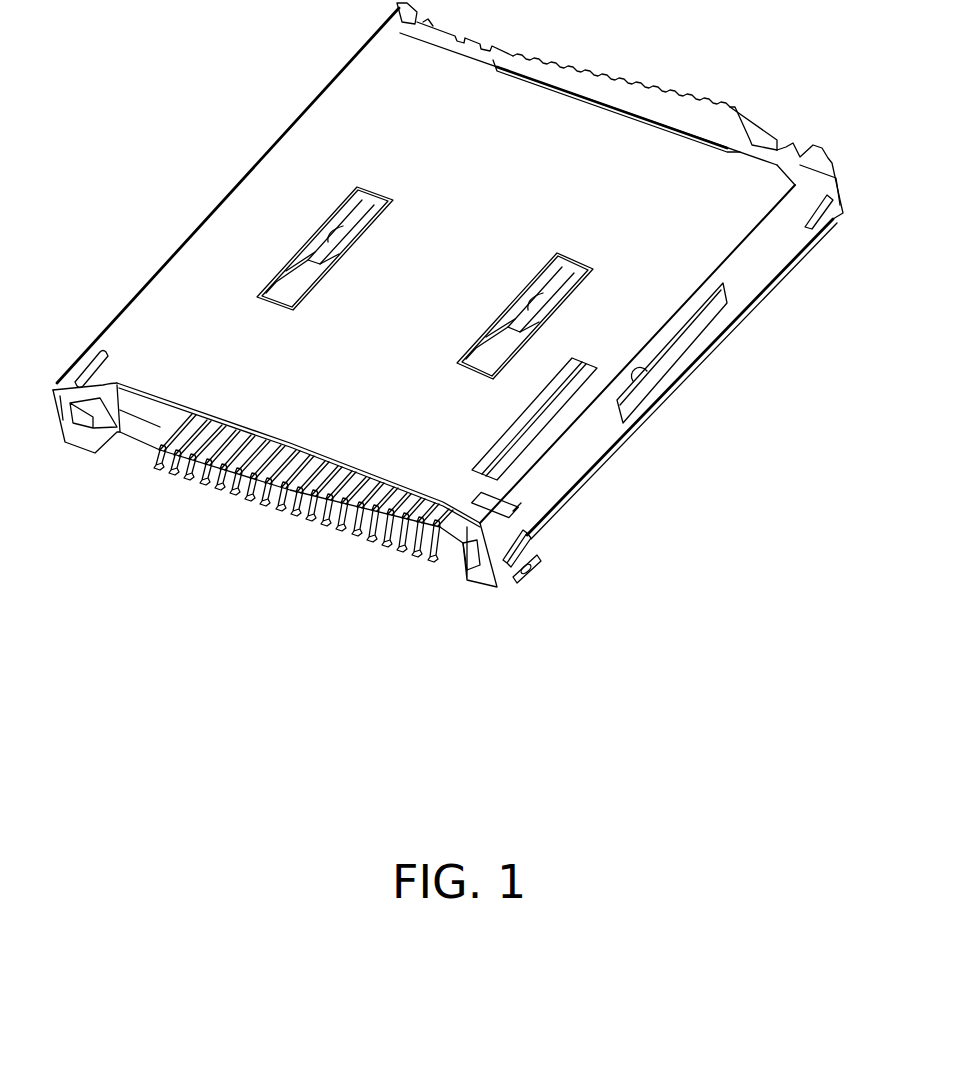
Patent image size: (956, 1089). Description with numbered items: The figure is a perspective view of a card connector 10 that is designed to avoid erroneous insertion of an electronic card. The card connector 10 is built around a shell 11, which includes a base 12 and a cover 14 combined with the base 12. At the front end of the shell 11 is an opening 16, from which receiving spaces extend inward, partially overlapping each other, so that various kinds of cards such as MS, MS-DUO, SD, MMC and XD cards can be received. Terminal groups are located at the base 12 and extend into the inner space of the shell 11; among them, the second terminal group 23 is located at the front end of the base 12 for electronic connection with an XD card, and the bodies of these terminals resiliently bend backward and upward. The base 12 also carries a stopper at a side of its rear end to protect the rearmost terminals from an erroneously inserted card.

The card connector 10 is at (444, 360).
The shell 11 is at (450, 271).
The base 12 is at (83, 450).
The cover 14 is at (306, 140).
The opening 16 is at (141, 452).
The second terminal group 23 is at (296, 512).